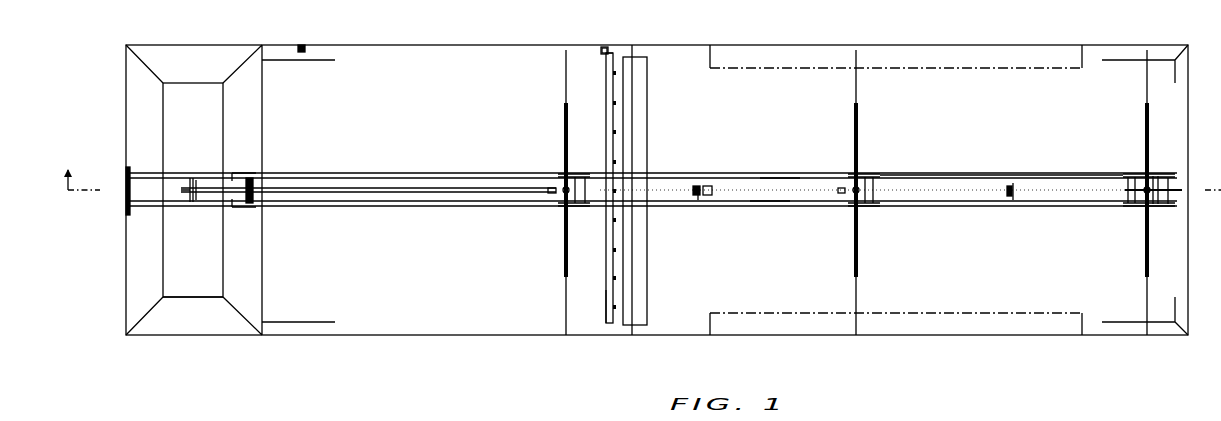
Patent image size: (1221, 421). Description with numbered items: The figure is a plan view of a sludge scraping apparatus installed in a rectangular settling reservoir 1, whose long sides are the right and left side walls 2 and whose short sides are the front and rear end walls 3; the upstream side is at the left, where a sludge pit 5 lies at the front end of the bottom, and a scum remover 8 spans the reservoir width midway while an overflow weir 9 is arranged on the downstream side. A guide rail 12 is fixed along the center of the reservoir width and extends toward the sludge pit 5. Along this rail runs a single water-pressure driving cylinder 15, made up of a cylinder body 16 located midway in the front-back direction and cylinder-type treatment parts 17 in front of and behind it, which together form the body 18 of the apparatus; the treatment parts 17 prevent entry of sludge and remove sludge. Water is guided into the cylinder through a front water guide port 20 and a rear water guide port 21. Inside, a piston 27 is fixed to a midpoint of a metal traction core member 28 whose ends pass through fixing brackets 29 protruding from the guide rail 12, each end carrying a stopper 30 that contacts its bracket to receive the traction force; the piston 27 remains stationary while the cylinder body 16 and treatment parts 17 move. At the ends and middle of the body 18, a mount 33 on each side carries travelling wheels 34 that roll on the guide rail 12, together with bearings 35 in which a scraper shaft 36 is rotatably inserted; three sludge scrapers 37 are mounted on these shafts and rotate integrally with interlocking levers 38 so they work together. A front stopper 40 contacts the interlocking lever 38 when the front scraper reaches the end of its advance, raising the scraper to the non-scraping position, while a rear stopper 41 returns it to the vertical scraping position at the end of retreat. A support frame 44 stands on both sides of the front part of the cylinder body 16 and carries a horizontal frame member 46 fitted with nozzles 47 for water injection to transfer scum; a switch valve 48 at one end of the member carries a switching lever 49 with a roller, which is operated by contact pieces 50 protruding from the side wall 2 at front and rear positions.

The rectangular settling reservoir 1 is at (1018, 45).
The side walls 2 is at (475, 351).
The end walls 3 is at (126, 268).
The sludge pit 5 is at (220, 327).
The scum remover 8 is at (648, 287).
The overflow weir 9 is at (765, 313).
The guide rail 12 is at (496, 173).
The water-pressure driving cylinder 15 is at (793, 196).
The cylinder body 16 is at (767, 196).
The treatment parts 17 is at (660, 195).
The body 18 is at (948, 183).
The front water guide port 20 is at (698, 196).
The rear water guide port 21 is at (1008, 197).
The piston 27 is at (705, 186).
The traction core member 28 is at (419, 193).
The fixing brackets 29 is at (197, 203).
The stopper 30 is at (189, 200).
The mount 33 is at (580, 175).
The travelling wheels 34 is at (582, 208).
The bearings 35 is at (559, 202).
The scraper shaft 36 is at (565, 260).
The sludge scraper 37 is at (565, 308).
The interlocking levers 38 is at (562, 188).
The front stopper 40 is at (252, 200).
The rear stopper 41 is at (1140, 180).
The support frame 44 is at (604, 212).
The horizontal frame member 46 is at (607, 298).
The nozzle 47 is at (616, 133).
The switch valve 48 is at (607, 56).
The switching lever 49 is at (600, 51).
The contact piece 50 is at (303, 45).